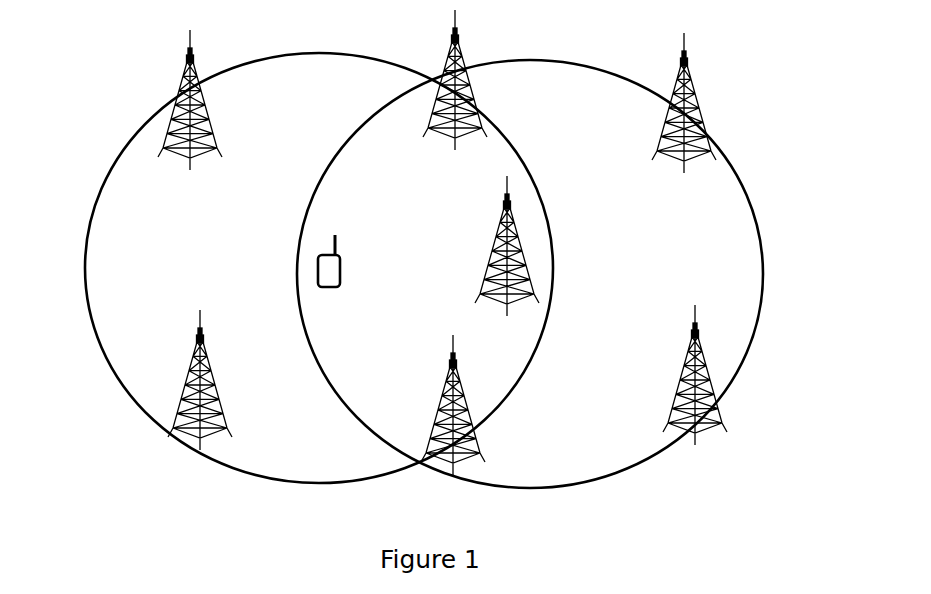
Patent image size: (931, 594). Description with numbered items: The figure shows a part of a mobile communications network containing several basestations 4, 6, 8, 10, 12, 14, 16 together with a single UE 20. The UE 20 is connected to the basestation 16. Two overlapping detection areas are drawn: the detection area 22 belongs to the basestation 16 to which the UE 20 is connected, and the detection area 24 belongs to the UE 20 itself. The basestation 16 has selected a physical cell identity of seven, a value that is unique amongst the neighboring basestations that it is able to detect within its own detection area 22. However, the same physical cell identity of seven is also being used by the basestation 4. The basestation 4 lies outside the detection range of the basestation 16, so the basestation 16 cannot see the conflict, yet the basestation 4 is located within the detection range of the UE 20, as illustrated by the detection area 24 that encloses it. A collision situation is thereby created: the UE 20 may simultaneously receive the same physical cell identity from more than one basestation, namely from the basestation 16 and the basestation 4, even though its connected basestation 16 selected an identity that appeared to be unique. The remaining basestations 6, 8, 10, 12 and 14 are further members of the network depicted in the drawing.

The basestation 4 is at (207, 110).
The basestation 6 is at (213, 372).
The basestation 8 is at (470, 88).
The basestation 10 is at (442, 393).
The basestation 12 is at (697, 96).
The basestation 14 is at (685, 366).
The basestation 16 is at (495, 243).
The UE 20 is at (340, 270).
The detection area of basestation 22 is at (763, 240).
The detection area of UE 24 is at (83, 257).